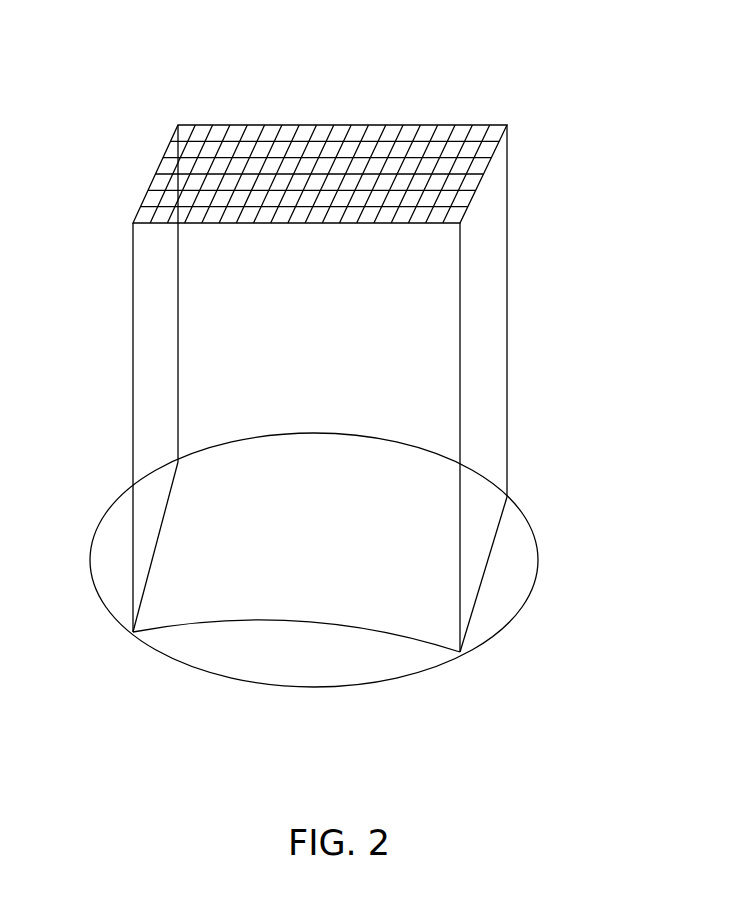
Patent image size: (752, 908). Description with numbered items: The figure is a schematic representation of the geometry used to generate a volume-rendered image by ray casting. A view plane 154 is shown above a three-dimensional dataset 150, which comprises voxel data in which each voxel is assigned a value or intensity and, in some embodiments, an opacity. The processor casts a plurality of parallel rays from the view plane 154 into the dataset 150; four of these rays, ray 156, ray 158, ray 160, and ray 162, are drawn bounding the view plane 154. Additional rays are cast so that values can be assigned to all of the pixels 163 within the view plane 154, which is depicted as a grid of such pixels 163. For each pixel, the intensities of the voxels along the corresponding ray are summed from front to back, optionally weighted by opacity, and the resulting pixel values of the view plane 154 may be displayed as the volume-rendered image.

The 3D dataset 150 is at (517, 590).
The view plane 154 is at (358, 131).
The ray 156 is at (180, 315).
The ray 158 is at (133, 380).
The ray 160 is at (507, 312).
The ray 162 is at (460, 400).
The pixels 163 is at (203, 138).